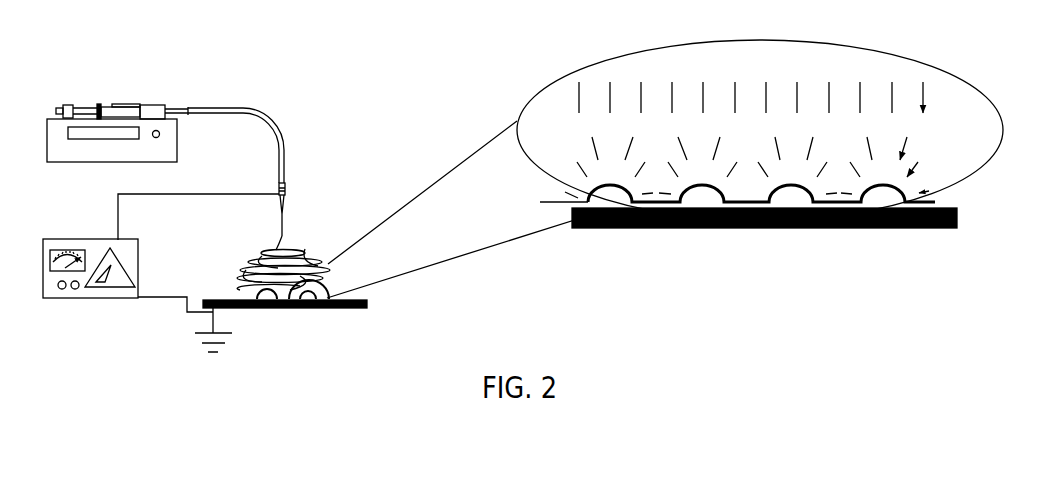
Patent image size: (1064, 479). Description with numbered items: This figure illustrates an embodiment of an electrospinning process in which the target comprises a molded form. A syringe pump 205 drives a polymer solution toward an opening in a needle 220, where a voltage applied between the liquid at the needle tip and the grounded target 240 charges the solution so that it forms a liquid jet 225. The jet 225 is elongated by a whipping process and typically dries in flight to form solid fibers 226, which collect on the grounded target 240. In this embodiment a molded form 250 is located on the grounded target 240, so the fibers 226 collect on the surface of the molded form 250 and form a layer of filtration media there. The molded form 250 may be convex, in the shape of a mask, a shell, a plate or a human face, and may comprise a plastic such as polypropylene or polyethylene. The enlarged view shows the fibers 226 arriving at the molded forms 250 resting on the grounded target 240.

The syringe pump 205 is at (153, 107).
The nozzle 220 is at (285, 189).
The electrospun fiber coil 225 is at (280, 240).
The fibers 226 is at (829, 92).
The grounded target 240 is at (357, 308).
The molded form 250 is at (278, 308).